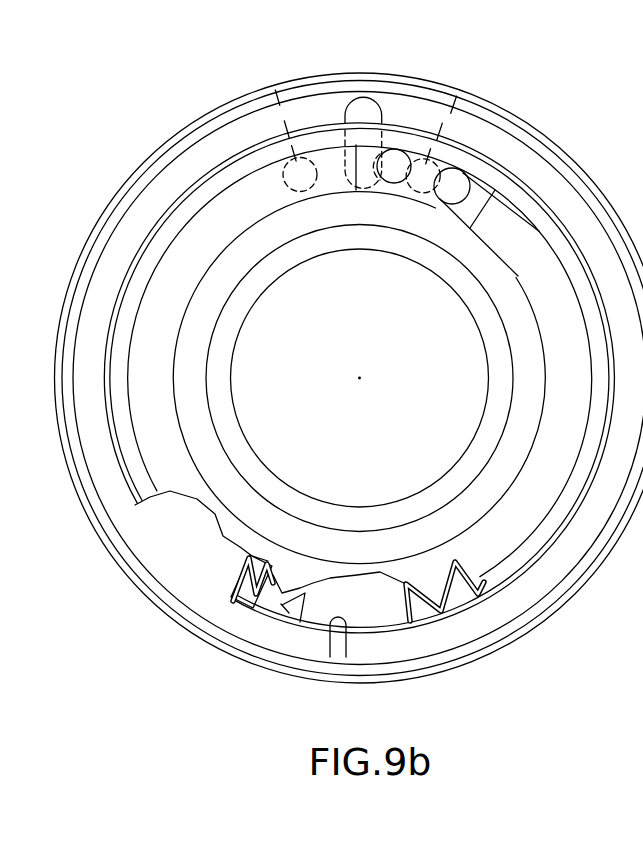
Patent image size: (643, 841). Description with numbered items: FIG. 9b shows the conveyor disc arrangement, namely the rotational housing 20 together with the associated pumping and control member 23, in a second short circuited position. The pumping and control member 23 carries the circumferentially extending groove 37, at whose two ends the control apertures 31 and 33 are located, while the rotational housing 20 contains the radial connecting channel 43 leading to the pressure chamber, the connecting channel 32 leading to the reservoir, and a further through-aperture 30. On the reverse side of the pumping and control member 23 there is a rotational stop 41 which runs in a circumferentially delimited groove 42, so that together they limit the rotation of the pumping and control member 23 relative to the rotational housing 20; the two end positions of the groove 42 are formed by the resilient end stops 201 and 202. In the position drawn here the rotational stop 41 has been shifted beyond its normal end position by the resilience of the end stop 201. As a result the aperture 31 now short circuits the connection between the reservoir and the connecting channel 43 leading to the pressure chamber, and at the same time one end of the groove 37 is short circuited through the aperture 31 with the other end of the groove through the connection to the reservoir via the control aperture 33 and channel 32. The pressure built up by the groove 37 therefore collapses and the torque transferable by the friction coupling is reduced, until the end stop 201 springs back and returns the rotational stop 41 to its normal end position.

The rotational housing 20 is at (128, 180).
The pumping and control member 23 is at (187, 193).
The through-aperture 30 is at (272, 82).
The control aperture 31 is at (396, 152).
The connecting channel 32 is at (440, 136).
The control aperture 33 is at (462, 172).
The circumferentially extending groove 37 is at (545, 268).
The rotational stop 41 is at (292, 612).
The circumferentially delimited groove 42 is at (343, 652).
The connecting channel 43 is at (360, 110).
The resilient end stop 201 is at (247, 605).
The resilient end stop 202 is at (433, 617).